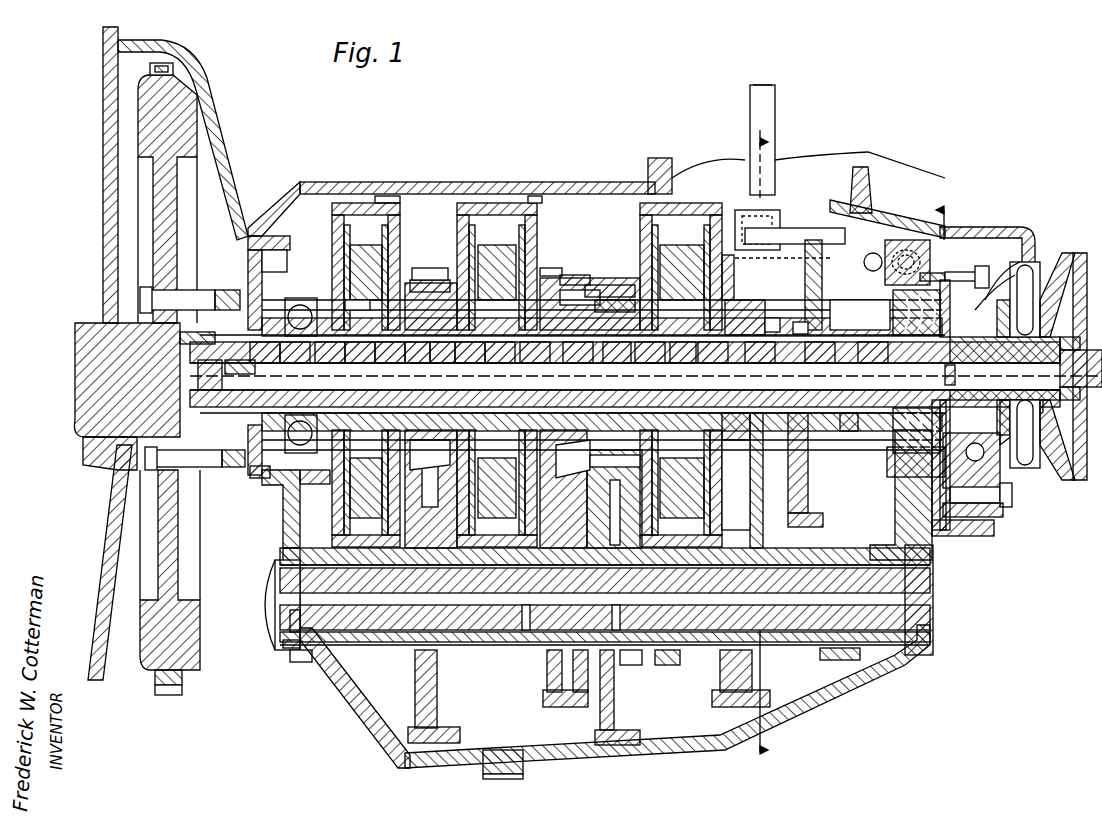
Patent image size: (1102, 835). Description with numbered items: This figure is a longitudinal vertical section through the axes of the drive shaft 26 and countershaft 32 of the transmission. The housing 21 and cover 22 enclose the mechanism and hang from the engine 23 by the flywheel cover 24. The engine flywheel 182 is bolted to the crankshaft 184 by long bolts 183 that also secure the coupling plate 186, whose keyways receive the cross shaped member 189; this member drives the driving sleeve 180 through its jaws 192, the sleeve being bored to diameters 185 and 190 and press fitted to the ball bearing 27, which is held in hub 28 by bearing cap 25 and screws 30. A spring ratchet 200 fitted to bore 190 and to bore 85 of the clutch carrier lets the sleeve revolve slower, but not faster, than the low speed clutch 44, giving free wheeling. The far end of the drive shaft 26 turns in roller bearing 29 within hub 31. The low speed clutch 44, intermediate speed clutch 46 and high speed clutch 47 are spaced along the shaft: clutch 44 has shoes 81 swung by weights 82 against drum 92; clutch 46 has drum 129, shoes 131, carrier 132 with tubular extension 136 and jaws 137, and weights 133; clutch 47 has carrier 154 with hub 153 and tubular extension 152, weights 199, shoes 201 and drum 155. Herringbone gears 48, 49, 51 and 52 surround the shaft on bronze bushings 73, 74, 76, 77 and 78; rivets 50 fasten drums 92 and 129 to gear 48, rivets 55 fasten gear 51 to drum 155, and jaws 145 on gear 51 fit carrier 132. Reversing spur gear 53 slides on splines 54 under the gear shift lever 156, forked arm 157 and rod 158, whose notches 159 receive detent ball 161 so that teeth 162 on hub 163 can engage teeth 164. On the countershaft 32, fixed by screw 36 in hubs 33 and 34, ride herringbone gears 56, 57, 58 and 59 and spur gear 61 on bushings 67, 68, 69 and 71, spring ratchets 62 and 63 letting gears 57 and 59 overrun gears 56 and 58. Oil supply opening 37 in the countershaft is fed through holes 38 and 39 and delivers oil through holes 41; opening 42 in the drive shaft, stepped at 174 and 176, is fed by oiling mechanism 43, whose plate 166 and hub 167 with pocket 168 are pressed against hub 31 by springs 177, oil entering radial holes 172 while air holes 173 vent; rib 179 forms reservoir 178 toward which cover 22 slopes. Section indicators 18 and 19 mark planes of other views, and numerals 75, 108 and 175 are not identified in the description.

The section line 18 is at (754, 447).
The rear housing section 19 is at (940, 500).
The housing 21 is at (283, 560).
The cover 22 is at (402, 182).
The engine 23 is at (103, 96).
The flywheel cover 24 is at (218, 140).
The bearing cap 25 is at (290, 458).
The drive shaft 26 is at (230, 397).
The ball bearing 27 is at (266, 500).
The hub 28 is at (305, 500).
The roller bearing 29 is at (893, 445).
The screws 30 is at (252, 472).
The hub 31 is at (930, 470).
The countershaft 32 is at (298, 600).
The hub 33 is at (283, 646).
The hub 34 is at (935, 636).
The screw 36 is at (290, 660).
The oil supply opening 37 is at (290, 616).
The oil feed hole 38 is at (272, 590).
The oil feed hole 39 is at (930, 553).
The oil feed holes 41 is at (340, 730).
The oil supply opening 42 is at (228, 378).
The oiling mechanism 43 is at (1000, 227).
The low speed clutch 44 is at (382, 225).
The intermediate speed clutch 46 is at (520, 203).
The high speed clutch 47 is at (648, 200).
The herringbone gear 48 is at (418, 280).
The herringbone gear 49 is at (548, 268).
The rivets 50 is at (440, 268).
The herringbone gear 51 is at (592, 286).
The herringbone gear 52 is at (708, 190).
The spur gear 53 is at (795, 225).
The multiple splines 54 is at (850, 318).
The rivets 55 is at (618, 300).
The herringbone gear 56 is at (483, 762).
The herringbone gear 57 is at (552, 680).
The herringbone gear 58 is at (615, 700).
The herringbone gear 59 is at (665, 660).
The spur gear 61 is at (872, 545).
The spring ratchet 62 is at (488, 660).
The spring ratchet 63 is at (640, 665).
The bronze bushing 67 is at (345, 685).
The bronze bushing 68 is at (526, 612).
The bronze bushing 69 is at (616, 612).
The bronze bushing 71 is at (822, 660).
The bronze bushing 73 is at (253, 236).
The bronze bushing 74 is at (442, 361).
The collar 75 is at (357, 306).
The bronze bushing 76 is at (470, 363).
The bronze bushing 77 is at (617, 363).
The bronze bushing 78 is at (683, 363).
The clutch shoes 81 is at (356, 203).
The clutch operating weights 82 is at (365, 487).
The inside diameter 85 is at (417, 363).
The clutch drum 92 is at (383, 200).
The housing slope 108 is at (320, 212).
The clutch drum 129 is at (530, 200).
The clutch shoes 131 is at (510, 210).
The carrier 132 is at (500, 363).
The clutch weights 133 is at (495, 370).
The tubular extension 136 is at (565, 275).
The jaws 137 is at (535, 363).
The jaws 145 is at (578, 363).
The tubular extension 152 is at (760, 361).
The hub 153 is at (650, 361).
The carrier 154 is at (713, 361).
The clutch drum 155 is at (648, 190).
The gear shift lever 156 is at (770, 95).
The forked arm 157 is at (816, 248).
The rod 158 is at (858, 200).
The notches 159 is at (875, 252).
The detent ball 161 is at (912, 245).
The teeth 162 is at (800, 322).
The hub 163 is at (820, 361).
The teeth 164 is at (773, 318).
The plate 166 is at (996, 266).
The hub 167 is at (998, 280).
The pocket 168 is at (962, 402).
The radial oil holes 172 is at (885, 345).
The radial air holes 173 is at (1060, 292).
The reduced diameter 174 is at (948, 373).
The shaft section 175 is at (266, 361).
The reduced diameter 176 is at (965, 342).
The springs 177 is at (982, 206).
The oil reservoir 178 is at (908, 255).
The rib 179 is at (905, 250).
The driving sleeve 180 is at (292, 366).
The engine flywheel 182 is at (178, 110).
The bolts 183 is at (108, 287).
The crankshaft 184 is at (85, 399).
The bore diameter 185 is at (330, 361).
The coupling plate 186 is at (213, 288).
The cross shaped member 189 is at (196, 364).
The bore diameter 190 is at (360, 361).
The jaws 192 is at (180, 352).
The weights 199 is at (690, 225).
The spring ratchet 200 is at (390, 363).
The shoes 201 is at (705, 225).